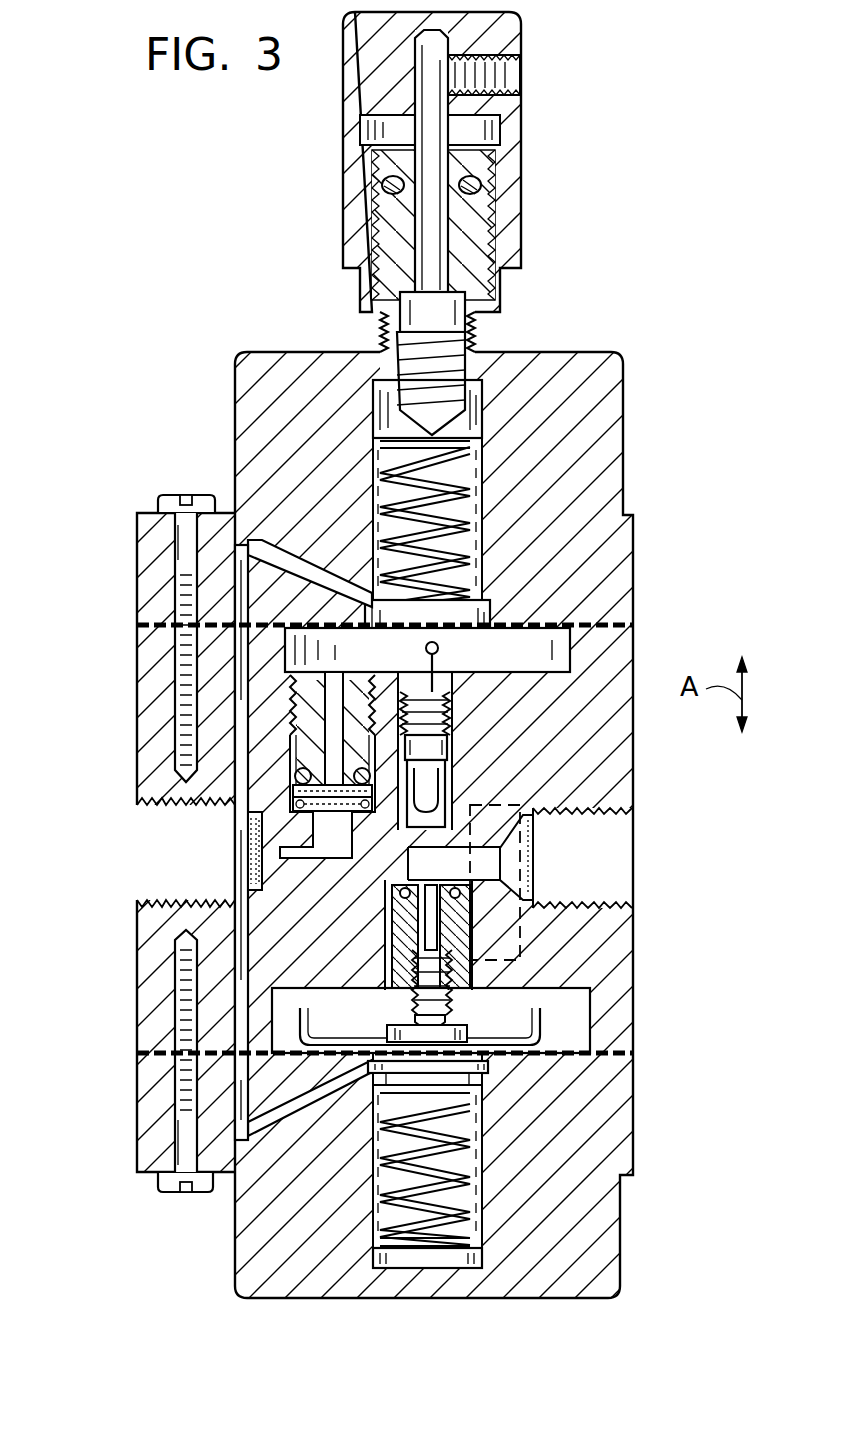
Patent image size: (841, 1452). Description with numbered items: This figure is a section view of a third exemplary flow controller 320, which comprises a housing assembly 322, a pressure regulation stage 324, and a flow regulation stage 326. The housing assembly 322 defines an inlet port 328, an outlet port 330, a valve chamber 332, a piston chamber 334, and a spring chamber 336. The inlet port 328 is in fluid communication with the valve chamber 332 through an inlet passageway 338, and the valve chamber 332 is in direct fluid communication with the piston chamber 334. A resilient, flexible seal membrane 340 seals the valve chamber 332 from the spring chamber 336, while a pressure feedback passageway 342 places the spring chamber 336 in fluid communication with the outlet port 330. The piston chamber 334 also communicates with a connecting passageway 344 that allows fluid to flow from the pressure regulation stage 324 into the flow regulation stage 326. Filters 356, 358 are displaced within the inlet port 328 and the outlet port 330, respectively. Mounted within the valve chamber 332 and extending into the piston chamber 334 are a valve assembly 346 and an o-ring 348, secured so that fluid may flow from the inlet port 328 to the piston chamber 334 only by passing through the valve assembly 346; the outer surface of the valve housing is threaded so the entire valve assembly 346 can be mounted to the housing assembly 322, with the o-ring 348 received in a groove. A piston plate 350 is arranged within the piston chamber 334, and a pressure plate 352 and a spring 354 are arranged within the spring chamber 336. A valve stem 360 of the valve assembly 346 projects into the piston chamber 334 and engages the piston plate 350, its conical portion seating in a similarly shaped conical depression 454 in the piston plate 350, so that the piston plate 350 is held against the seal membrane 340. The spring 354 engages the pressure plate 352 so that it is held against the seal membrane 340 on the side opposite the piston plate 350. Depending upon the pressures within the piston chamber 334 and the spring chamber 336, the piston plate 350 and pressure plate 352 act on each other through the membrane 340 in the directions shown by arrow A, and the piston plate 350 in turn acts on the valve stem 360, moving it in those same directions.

The flow controller 320 is at (457, 773).
The housing assembly 322 is at (627, 351).
The flow regulation stage 326 is at (653, 419).
The outlet port 330 is at (155, 817).
The filter 358 is at (249, 845).
The pressure regulation stage 324 is at (124, 957).
The valve assembly 346 is at (381, 930).
The conical depression 454 is at (480, 1032).
The pressure feedback passageway 342 is at (246, 1125).
The inlet port 328 is at (610, 822).
The filter 356 is at (590, 840).
The inlet passageway 338 is at (467, 857).
The o-ring 348 is at (458, 898).
The valve chamber 332 is at (386, 943).
The connecting passageway 344 is at (525, 955).
The valve stem 360 is at (386, 1020).
The piston chamber 334 is at (565, 1010).
The seal membrane 340 is at (545, 1055).
The piston plate 350 is at (482, 1070).
The pressure plate 352 is at (470, 1090).
The spring chamber 336 is at (462, 1160).
The spring 354 is at (465, 1193).